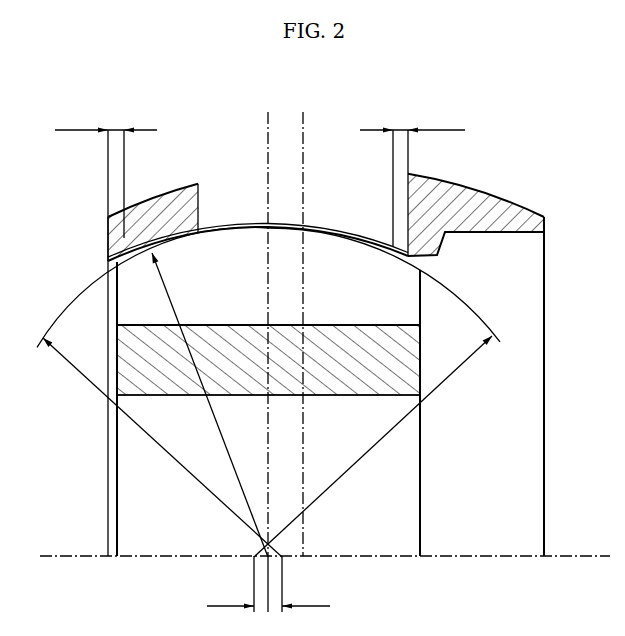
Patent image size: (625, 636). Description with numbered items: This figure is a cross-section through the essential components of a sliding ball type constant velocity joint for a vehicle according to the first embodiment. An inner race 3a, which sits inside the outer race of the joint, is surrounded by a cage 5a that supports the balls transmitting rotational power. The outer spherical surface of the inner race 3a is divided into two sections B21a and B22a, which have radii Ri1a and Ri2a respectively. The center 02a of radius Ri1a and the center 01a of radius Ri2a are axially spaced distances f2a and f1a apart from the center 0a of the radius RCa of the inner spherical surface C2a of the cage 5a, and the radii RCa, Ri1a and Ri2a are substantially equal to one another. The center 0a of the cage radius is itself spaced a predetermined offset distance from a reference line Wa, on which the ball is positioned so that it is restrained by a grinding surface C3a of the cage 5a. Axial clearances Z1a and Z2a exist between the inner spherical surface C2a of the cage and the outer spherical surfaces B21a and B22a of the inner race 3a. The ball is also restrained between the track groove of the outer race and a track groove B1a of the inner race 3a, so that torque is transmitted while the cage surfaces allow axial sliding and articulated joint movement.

The cage 5a is at (495, 208).
The inner race 3a is at (122, 371).
The reference line Wa is at (303, 142).
The axial clearance Z1a is at (106, 121).
The axial clearance Z2a is at (413, 121).
The inner spherical surface C2a is at (163, 237).
The grinding surface C3a is at (190, 214).
The outer spherical surface section B21a is at (128, 264).
The outer spherical surface section B22a is at (385, 253).
The track groove B1a is at (255, 325).
The radius of inner spherical surface RCa is at (210, 405).
The radius of first section Ri1a is at (159, 392).
The radius of second section Ri2a is at (377, 392).
The center of radius RCa 0a is at (268, 557).
The center of radius Ri2a 01a is at (254, 557).
The center of radius Ri1a 02a is at (282, 557).
The axial distance f1a is at (230, 596).
The axial distance f2a is at (306, 596).